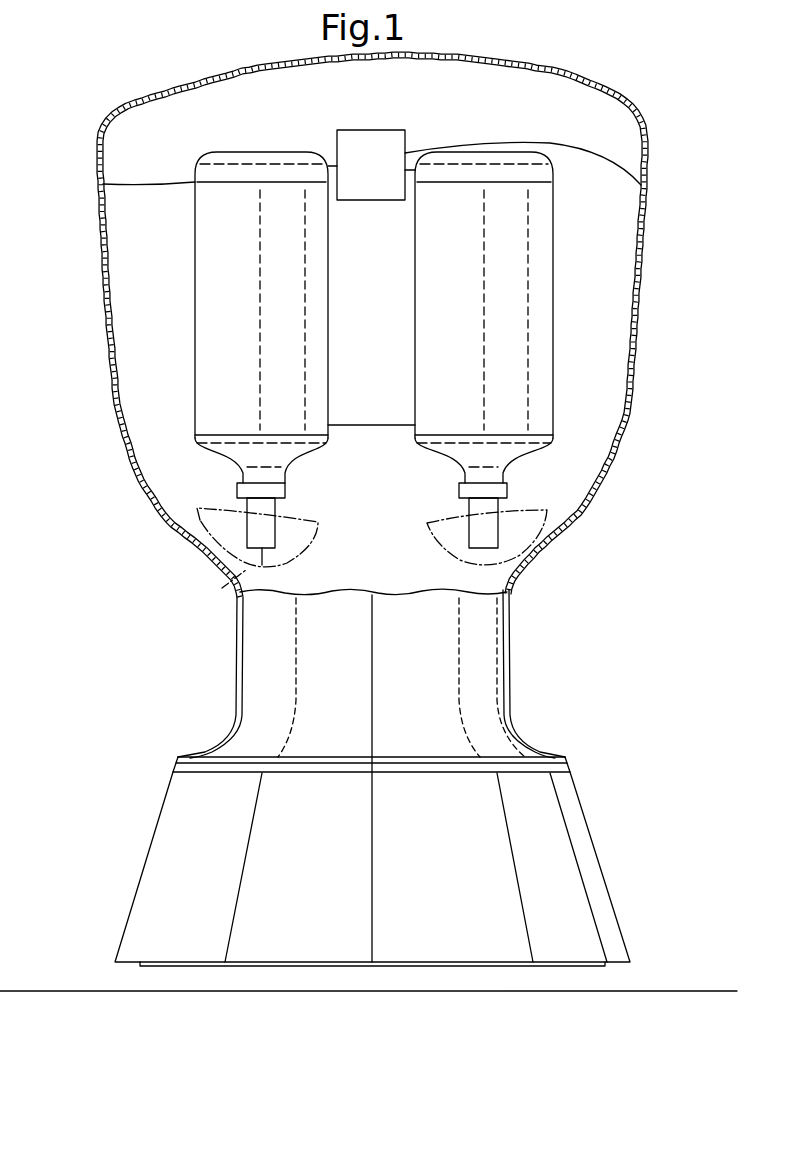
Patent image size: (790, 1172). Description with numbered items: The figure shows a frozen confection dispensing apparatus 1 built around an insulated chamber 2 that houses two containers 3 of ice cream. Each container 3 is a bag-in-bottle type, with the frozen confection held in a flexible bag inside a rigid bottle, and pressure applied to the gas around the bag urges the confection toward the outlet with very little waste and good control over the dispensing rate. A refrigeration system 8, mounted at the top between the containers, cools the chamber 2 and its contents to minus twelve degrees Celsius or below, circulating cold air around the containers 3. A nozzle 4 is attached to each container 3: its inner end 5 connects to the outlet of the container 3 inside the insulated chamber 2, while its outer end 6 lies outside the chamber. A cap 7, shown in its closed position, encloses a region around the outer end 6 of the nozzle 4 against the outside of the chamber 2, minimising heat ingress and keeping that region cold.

The apparatus 1 is at (89, 115).
The insulated chamber 2 is at (637, 360).
The container 3 is at (230, 290).
The nozzle 4 is at (255, 527).
The inner end of the nozzle 5 is at (265, 495).
The outer end of the nozzle 6 is at (262, 567).
The cap 7 is at (222, 588).
The refrigeration system 8 is at (356, 145).